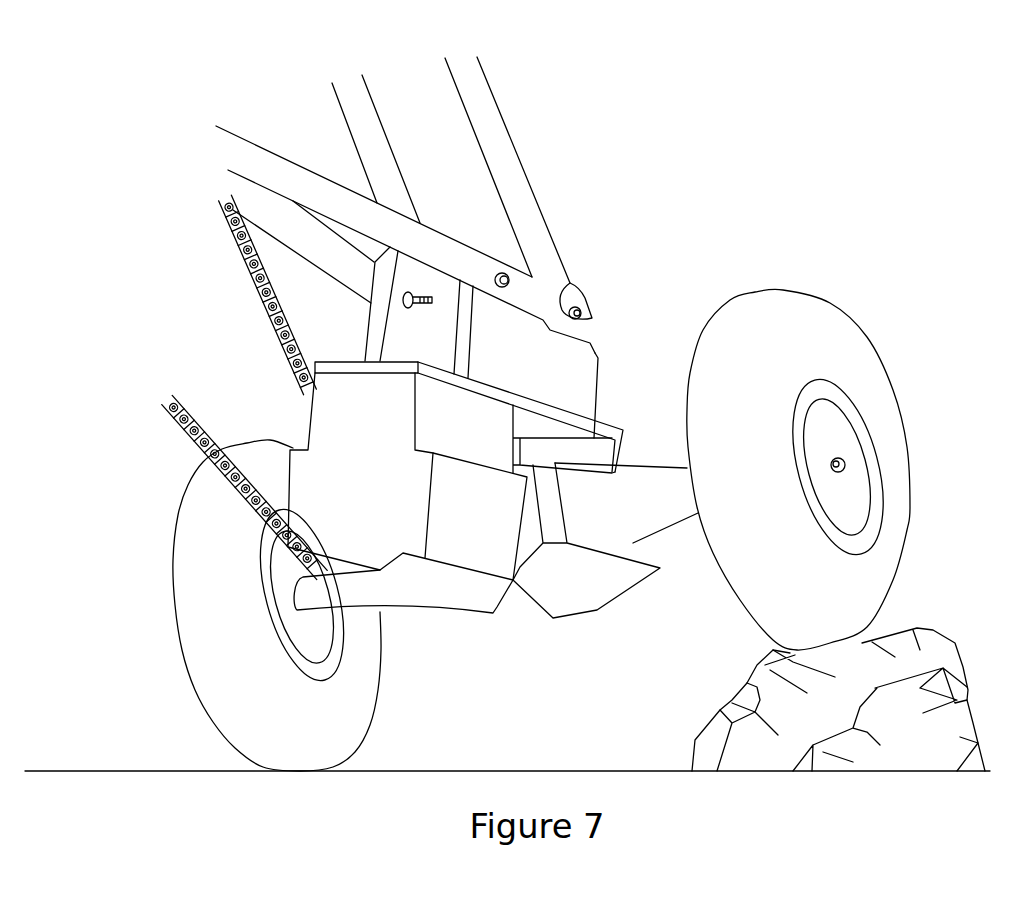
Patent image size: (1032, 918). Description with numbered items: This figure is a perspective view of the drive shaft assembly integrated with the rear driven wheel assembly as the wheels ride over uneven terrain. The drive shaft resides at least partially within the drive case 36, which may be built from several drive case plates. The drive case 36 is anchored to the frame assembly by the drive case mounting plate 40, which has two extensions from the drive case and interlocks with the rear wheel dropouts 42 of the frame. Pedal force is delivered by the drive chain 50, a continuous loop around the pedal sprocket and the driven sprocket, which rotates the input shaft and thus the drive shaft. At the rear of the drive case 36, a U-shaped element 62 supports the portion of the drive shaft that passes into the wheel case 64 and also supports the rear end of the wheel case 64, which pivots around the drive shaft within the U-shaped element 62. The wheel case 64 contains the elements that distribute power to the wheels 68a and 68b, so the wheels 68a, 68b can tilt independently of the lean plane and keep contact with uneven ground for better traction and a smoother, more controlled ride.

The drive case 36 is at (370, 522).
The drive case mounting plate 40 is at (582, 382).
The rear wheel dropouts 42 is at (570, 284).
The drive chain 50 is at (262, 306).
The U-shaped element 62 is at (617, 428).
The wheel case 64 is at (570, 580).
The wheel 68a is at (783, 605).
The wheel 68b is at (325, 741).